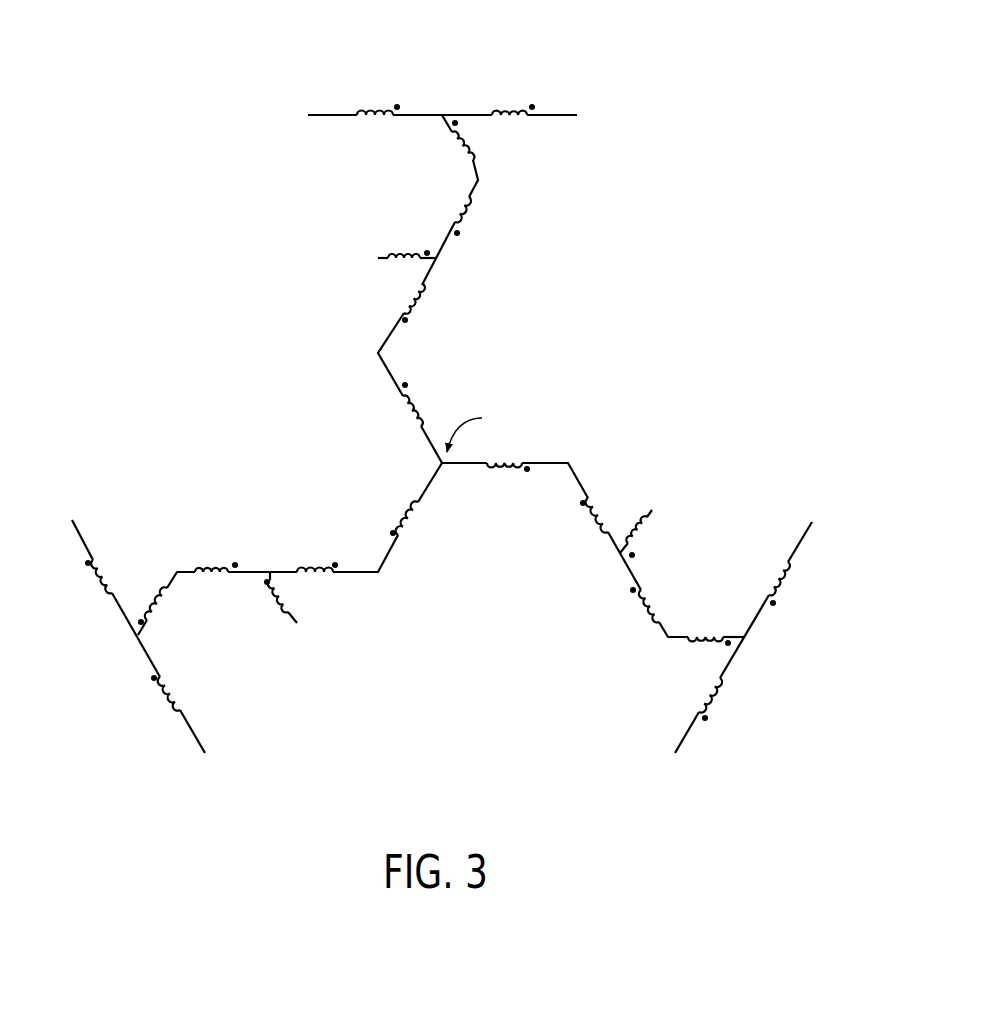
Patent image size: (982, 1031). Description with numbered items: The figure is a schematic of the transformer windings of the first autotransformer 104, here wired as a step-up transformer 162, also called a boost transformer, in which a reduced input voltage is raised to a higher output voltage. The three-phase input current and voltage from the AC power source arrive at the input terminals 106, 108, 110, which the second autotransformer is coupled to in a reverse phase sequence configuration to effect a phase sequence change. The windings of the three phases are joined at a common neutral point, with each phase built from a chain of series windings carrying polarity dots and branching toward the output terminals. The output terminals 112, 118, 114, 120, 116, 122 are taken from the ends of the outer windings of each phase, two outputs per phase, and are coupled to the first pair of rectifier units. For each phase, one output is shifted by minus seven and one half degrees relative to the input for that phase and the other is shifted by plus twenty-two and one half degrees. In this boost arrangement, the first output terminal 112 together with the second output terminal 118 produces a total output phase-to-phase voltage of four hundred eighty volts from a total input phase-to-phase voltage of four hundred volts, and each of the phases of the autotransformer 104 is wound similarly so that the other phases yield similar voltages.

The first autotransformer 104 is at (183, 153).
The step-up transformer 162 is at (107, 238).
The input terminal 106 is at (358, 283).
The input terminal 108 is at (640, 502).
The input terminal 110 is at (285, 637).
The output terminal 112 is at (312, 100).
The output terminal 118 is at (580, 97).
The output terminal 114 is at (792, 500).
The output terminal 120 is at (668, 743).
The output terminal 116 is at (187, 762).
The output terminal 122 is at (93, 515).